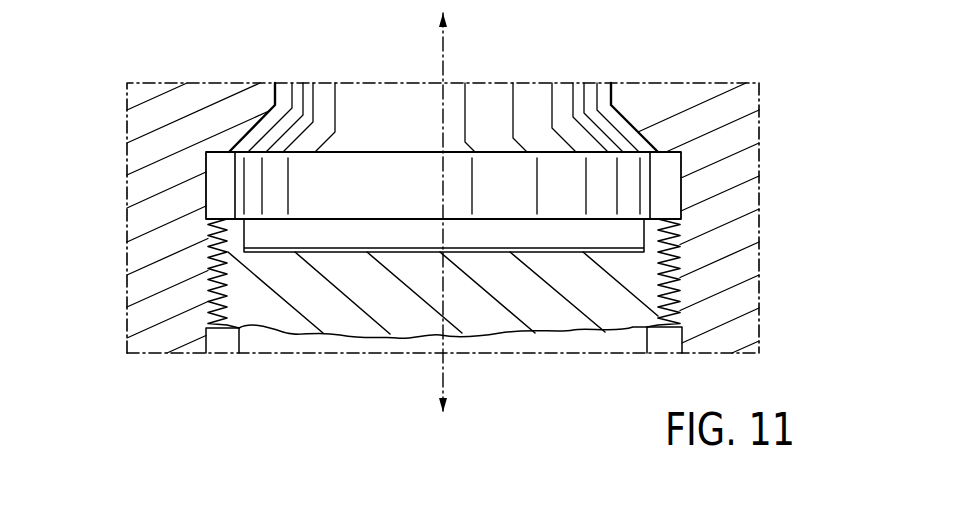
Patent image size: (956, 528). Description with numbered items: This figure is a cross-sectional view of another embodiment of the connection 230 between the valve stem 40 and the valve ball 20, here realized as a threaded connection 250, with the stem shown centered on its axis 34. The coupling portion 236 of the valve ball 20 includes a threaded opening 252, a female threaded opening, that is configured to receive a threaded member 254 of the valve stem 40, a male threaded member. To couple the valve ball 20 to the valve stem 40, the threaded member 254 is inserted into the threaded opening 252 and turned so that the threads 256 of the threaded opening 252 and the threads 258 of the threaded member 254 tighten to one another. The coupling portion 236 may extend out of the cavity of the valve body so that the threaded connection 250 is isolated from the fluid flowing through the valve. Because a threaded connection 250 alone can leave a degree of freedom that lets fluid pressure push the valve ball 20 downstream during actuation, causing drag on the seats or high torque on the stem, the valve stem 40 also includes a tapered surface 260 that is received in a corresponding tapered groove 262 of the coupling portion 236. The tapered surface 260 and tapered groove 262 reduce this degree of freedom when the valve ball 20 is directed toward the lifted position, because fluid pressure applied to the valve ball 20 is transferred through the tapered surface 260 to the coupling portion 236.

The valve ball 20 is at (270, 343).
The axis 34 is at (445, 63).
The valve stem 40 is at (362, 118).
The connection 230 is at (742, 58).
The coupling portion 236 is at (725, 182).
The threaded connection 250 is at (105, 275).
The threaded opening 252 is at (731, 278).
The threaded member 254 is at (580, 298).
The threads of the threaded opening 256 is at (222, 272).
The threads of the threaded member 258 is at (222, 293).
The tapered surface 260 is at (247, 123).
The tapered groove 262 is at (223, 133).